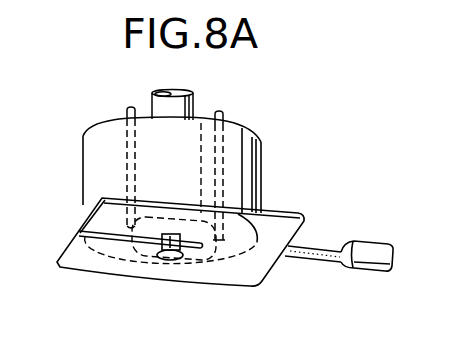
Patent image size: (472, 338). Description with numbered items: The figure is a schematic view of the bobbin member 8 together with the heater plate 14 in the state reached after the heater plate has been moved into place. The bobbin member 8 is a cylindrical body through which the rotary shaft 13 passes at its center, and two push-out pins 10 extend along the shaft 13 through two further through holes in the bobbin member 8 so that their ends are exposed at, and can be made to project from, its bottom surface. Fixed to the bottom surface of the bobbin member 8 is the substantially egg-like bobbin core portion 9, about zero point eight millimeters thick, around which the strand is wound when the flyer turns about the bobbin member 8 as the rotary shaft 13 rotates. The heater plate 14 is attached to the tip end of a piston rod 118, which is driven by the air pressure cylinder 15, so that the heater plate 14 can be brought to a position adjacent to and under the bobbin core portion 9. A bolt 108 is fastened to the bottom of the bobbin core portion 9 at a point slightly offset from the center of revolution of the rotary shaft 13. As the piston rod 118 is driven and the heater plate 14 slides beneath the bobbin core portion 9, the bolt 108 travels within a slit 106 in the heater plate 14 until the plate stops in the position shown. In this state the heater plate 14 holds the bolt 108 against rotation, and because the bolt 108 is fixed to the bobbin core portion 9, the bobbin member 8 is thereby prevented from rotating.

The bobbin member 8 is at (262, 168).
The bobbin core portion 9 is at (208, 244).
The push-out pins 10 is at (223, 117).
The rotary shaft 13 is at (195, 101).
The heater plate 14 is at (270, 256).
The air pressure cylinder 15 is at (377, 240).
The slit 106 is at (103, 231).
The bolt 108 is at (168, 260).
The piston rod 118 is at (320, 258).